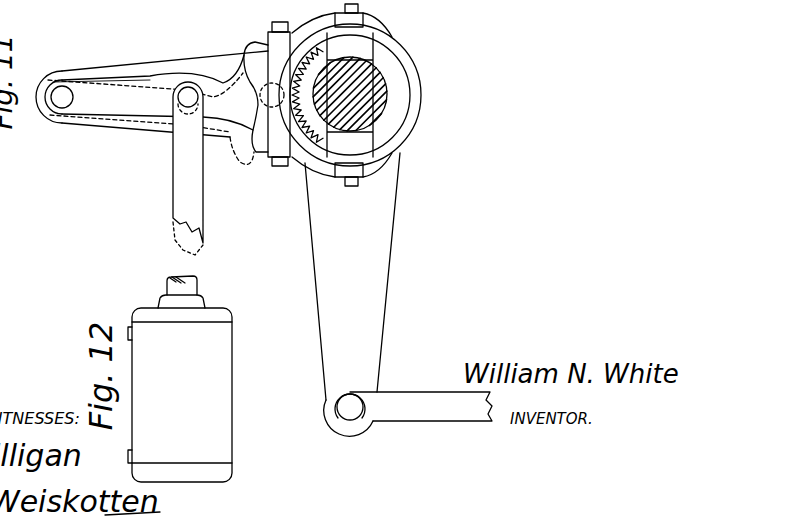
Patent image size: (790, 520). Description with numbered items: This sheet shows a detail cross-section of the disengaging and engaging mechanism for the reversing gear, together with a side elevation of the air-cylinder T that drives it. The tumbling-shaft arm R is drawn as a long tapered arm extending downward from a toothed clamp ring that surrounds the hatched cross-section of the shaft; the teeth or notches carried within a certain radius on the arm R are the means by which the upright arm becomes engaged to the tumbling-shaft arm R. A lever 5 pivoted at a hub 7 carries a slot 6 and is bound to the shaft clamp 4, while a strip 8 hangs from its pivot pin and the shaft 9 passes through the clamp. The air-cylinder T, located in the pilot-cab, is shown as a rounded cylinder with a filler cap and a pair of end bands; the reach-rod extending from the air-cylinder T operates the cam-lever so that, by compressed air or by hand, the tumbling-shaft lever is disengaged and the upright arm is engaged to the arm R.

In FIG. 11, the clamp ring 4 is at (300, 45).
In FIG. 11, the lever arm 5 is at (77, 72).
In FIG. 11, the slot 6 is at (134, 90).
In FIG. 11, the hub 7 is at (278, 67).
In FIG. 11, the strip 8 is at (180, 203).
In FIG. 11, the shaft 9 is at (380, 90).
In FIG. 11, the tumbling-shaft arm R is at (335, 325).
In FIG. 12, the air-cylinder T is at (180, 379).